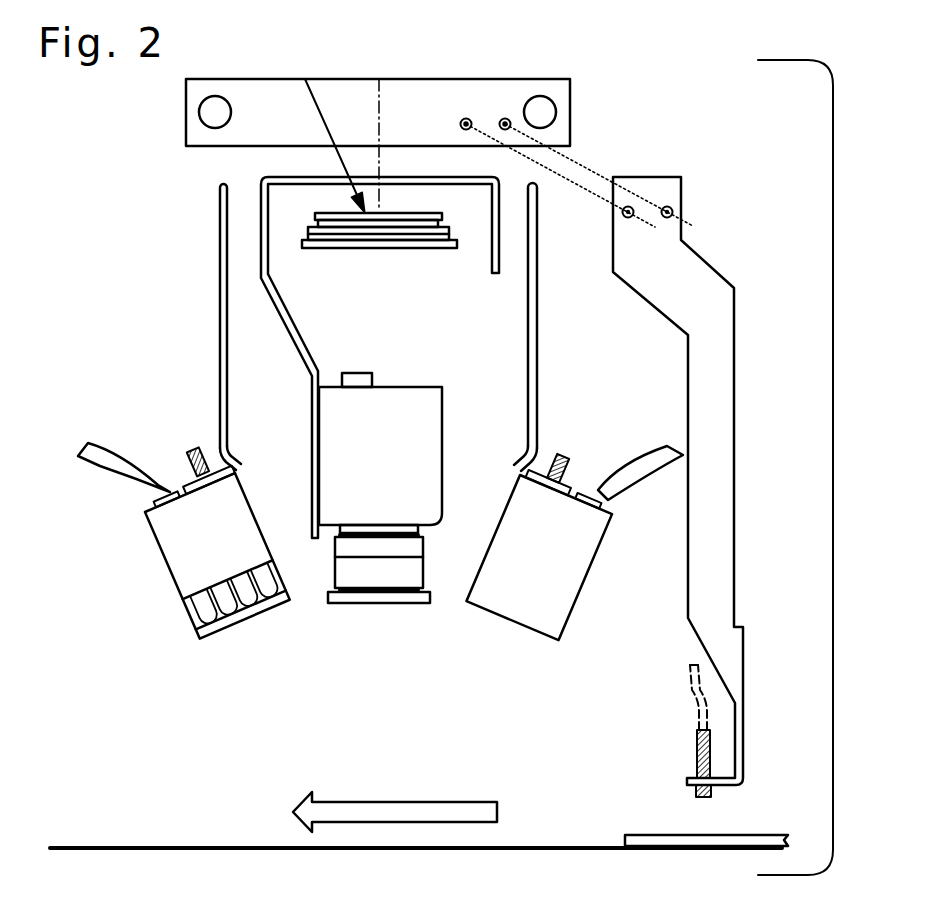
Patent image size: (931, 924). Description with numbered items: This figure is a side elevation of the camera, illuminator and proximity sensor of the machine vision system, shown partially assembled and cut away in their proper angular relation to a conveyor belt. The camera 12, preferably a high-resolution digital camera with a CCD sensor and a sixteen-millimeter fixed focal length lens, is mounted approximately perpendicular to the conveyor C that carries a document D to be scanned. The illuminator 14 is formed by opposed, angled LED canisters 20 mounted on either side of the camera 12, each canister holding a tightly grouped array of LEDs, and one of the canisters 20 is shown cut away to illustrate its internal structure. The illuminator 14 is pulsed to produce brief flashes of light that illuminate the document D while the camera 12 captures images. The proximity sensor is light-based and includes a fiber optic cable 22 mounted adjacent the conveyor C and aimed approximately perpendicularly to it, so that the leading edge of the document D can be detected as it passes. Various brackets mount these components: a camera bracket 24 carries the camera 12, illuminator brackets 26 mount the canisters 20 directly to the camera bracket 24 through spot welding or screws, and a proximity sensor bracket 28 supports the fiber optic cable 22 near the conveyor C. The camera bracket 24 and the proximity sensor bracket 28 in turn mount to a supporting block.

The camera 12 is at (356, 476).
The illuminator 14 is at (380, 539).
The LED canisters 20 is at (194, 559).
The fiber optic cable 22 is at (697, 712).
The camera bracket 24 is at (290, 313).
The illuminator brackets 26 is at (220, 362).
The proximity sensor bracket 28 is at (661, 292).
The conveyor C is at (80, 846).
The document D is at (750, 835).